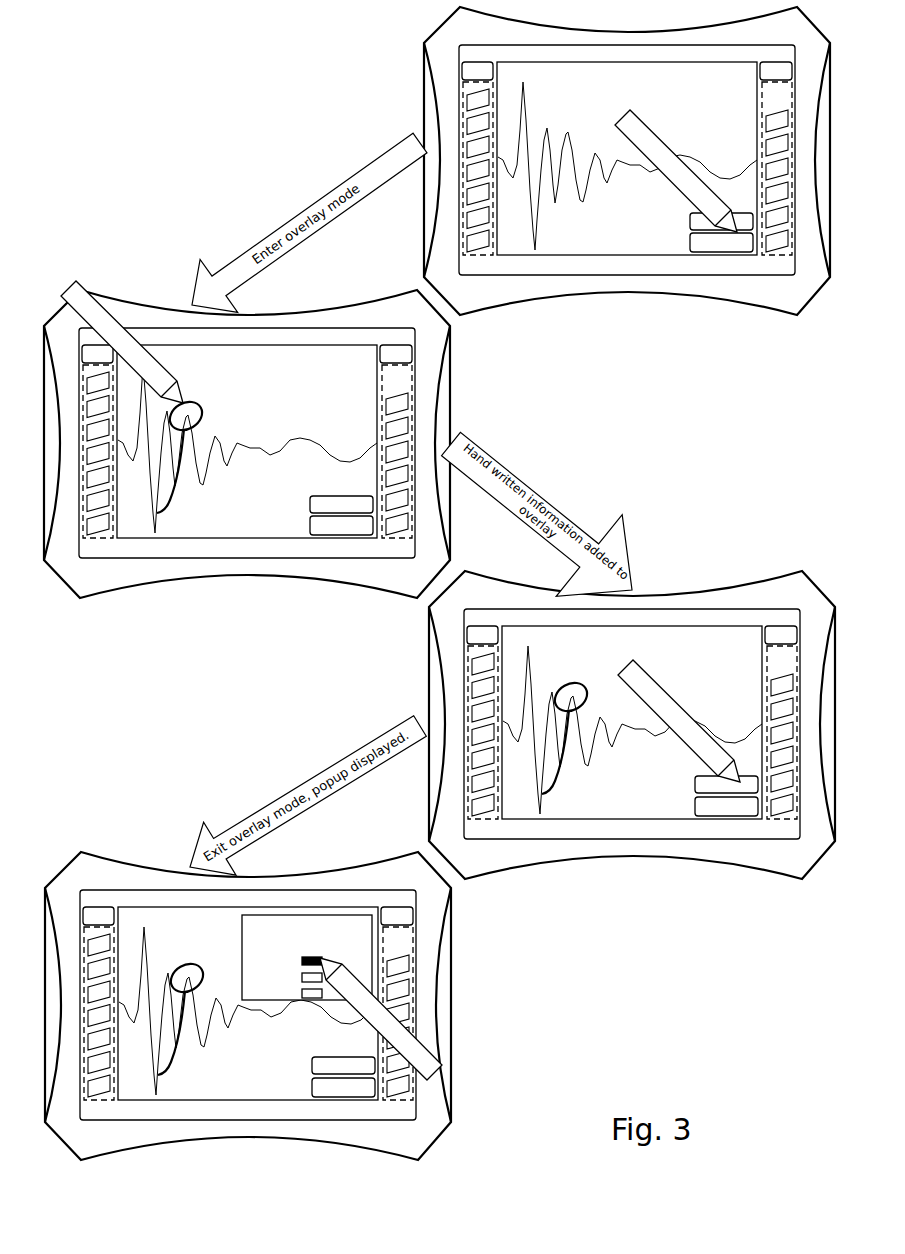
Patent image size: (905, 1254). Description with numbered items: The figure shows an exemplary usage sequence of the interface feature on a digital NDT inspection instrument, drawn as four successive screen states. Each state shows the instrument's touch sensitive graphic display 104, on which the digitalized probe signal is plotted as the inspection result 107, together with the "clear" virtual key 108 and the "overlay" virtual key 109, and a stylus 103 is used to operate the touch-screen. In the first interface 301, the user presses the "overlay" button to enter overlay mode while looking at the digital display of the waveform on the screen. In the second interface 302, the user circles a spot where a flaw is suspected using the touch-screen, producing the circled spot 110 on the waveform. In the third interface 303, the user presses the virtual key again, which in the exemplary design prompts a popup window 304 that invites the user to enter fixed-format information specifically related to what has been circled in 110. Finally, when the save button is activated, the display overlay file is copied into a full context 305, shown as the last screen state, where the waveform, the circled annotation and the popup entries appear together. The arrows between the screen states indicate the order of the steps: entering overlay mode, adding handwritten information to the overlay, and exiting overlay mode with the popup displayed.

The stylus 103 is at (640, 130).
The touch sensitive graphic display 104 is at (550, 243).
The inspection result 107 is at (620, 165).
The clear virtual key 108 is at (690, 222).
The overlay virtual key 109 is at (690, 244).
The circled spot 110 is at (157, 513).
The interface 301 is at (438, 128).
The interface 302 is at (450, 408).
The interface 303 is at (463, 712).
The popup window 304 is at (327, 997).
The full context 305 is at (447, 1002).